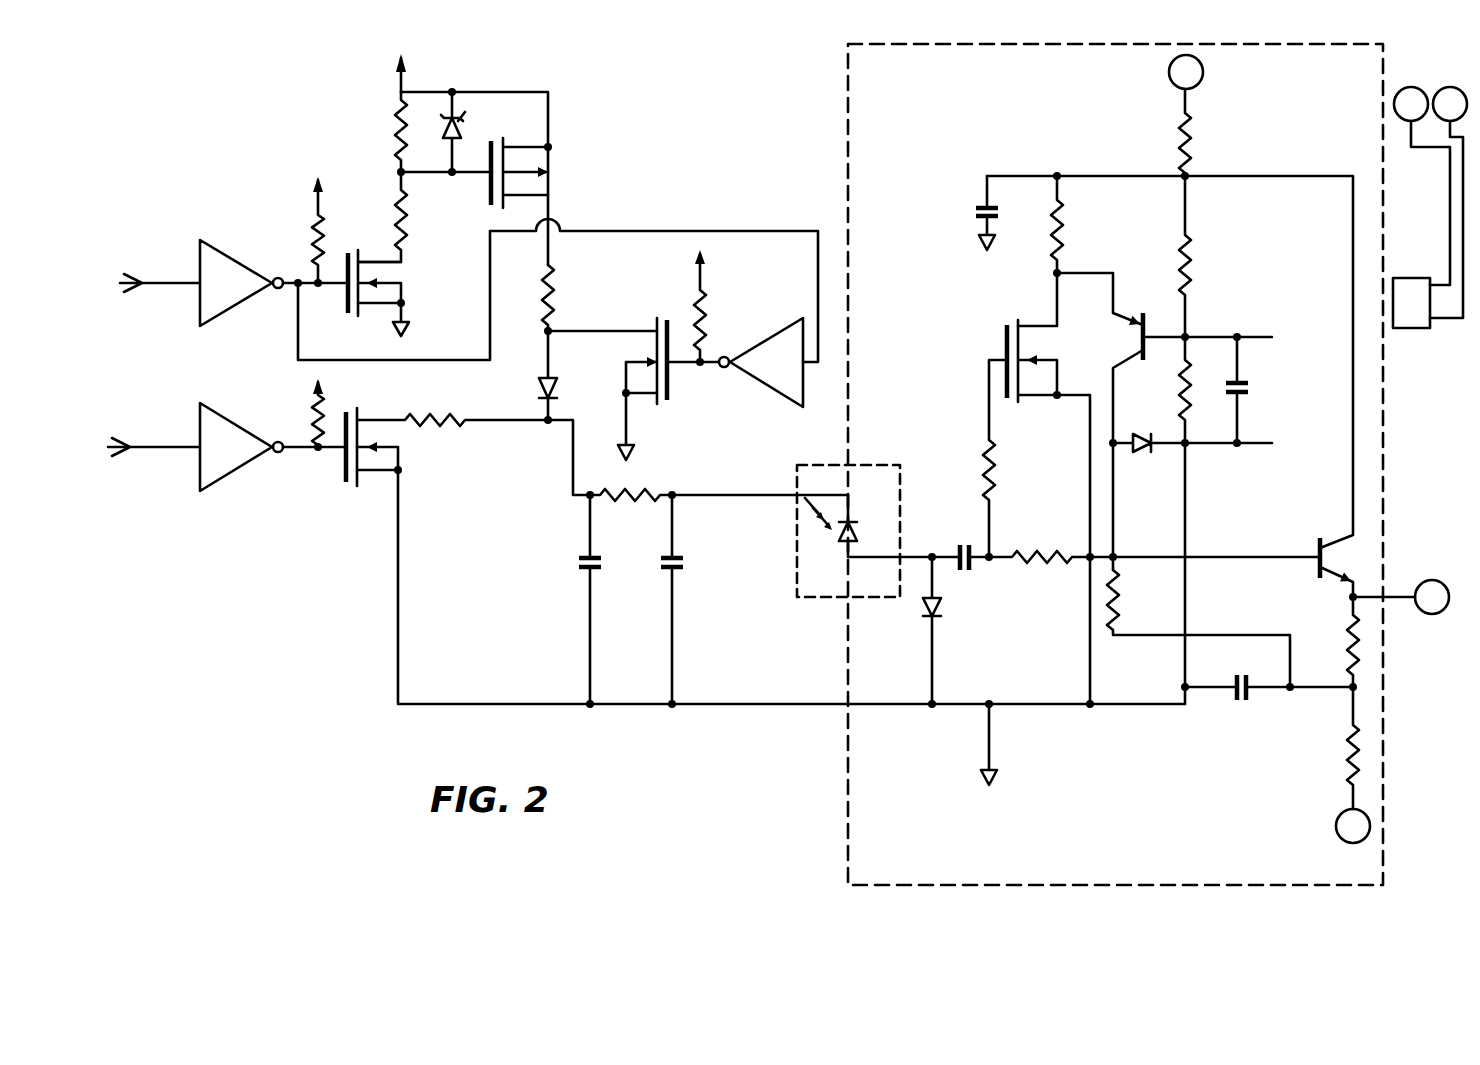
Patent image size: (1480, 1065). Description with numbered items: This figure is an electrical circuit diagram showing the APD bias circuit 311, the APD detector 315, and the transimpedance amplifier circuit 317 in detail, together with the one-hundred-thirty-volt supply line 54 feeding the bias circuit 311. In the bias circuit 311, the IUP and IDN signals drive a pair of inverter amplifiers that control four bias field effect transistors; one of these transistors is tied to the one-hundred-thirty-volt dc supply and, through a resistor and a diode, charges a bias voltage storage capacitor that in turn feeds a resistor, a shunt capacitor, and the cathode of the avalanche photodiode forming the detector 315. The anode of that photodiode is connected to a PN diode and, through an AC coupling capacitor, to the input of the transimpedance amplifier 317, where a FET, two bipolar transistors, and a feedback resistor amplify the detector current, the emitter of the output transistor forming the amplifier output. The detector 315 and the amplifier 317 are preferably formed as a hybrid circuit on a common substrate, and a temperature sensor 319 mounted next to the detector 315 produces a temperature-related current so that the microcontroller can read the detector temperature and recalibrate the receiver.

The 130V power supply line 54 is at (405, 77).
The APD bias circuit 311 is at (706, 145).
The APD detector 315 is at (900, 466).
The transimpedance amplifier circuit 317 is at (1076, 137).
The temperature sensor 319 is at (1412, 278).